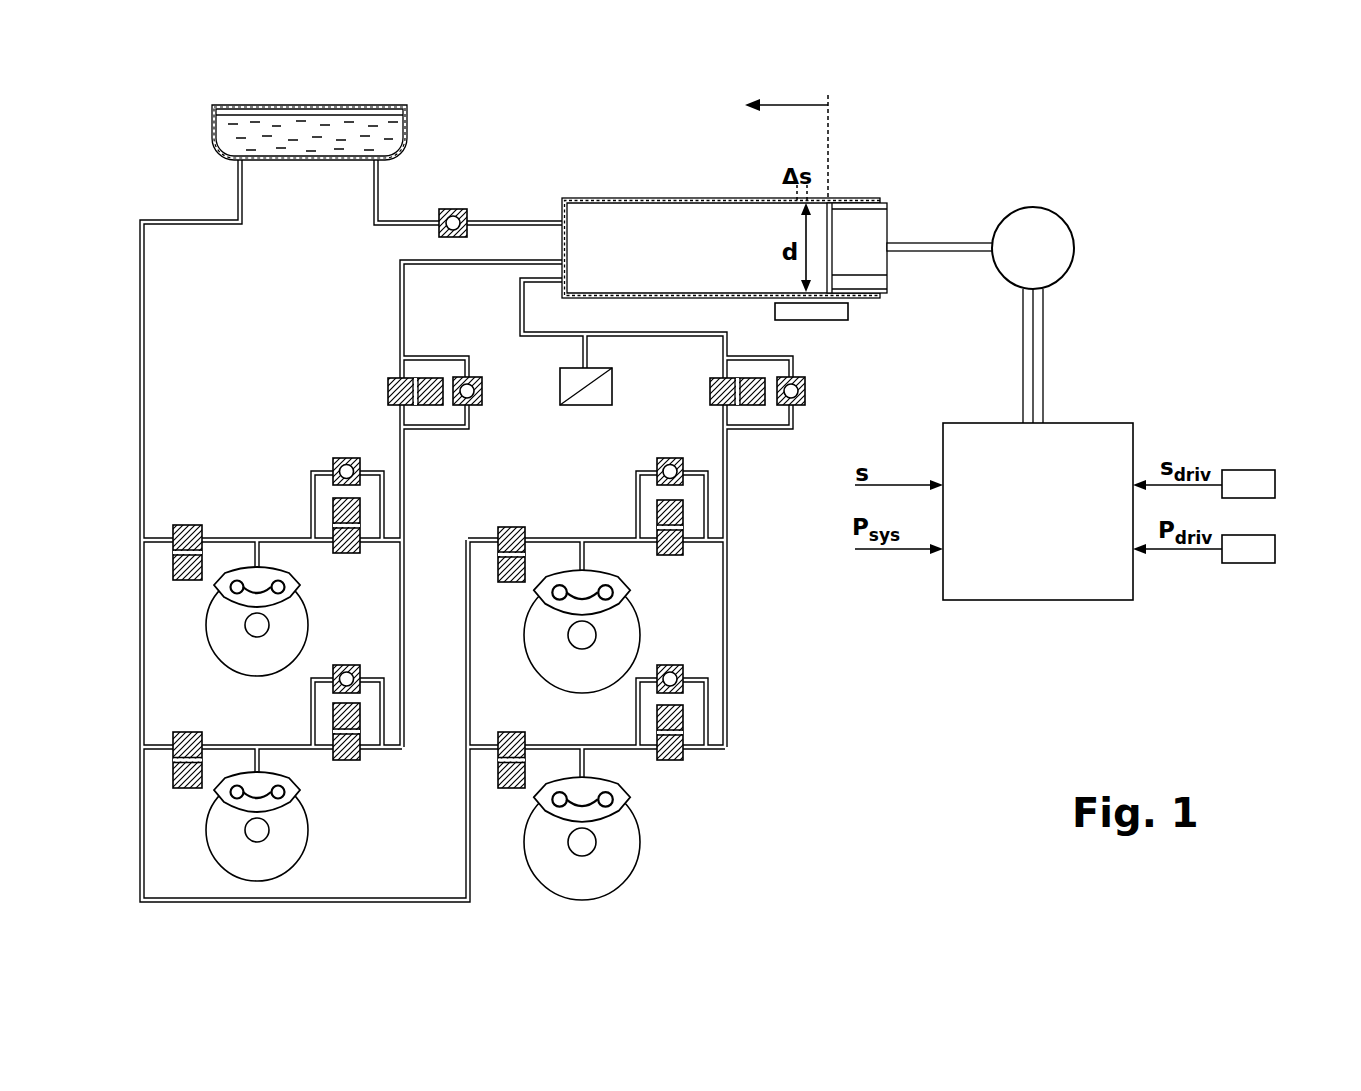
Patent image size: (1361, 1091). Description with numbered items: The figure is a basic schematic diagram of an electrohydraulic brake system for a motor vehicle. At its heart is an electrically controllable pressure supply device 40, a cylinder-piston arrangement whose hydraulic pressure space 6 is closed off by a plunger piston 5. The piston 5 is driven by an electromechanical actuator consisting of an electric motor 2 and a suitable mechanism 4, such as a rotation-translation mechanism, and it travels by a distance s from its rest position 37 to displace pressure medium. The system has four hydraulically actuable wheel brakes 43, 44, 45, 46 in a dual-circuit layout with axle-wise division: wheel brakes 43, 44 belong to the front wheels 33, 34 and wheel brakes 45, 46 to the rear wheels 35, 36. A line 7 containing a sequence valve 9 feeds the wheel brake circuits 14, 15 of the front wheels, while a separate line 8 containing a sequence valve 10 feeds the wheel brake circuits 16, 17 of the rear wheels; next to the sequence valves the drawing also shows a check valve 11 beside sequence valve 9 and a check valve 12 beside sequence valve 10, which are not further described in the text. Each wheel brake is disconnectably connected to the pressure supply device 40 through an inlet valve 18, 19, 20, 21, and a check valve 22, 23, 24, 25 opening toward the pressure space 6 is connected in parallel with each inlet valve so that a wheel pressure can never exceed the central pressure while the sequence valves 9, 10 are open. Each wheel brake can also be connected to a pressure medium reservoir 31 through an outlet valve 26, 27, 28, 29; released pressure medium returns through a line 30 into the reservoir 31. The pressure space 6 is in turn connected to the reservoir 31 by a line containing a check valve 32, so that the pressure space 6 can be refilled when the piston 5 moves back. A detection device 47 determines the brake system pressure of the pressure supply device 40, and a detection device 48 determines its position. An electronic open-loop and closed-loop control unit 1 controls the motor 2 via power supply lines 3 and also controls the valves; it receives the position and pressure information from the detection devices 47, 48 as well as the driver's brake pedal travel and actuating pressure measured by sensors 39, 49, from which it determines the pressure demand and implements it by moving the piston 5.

The open-loop and closed-loop control unit 1 is at (1040, 601).
The electric motor 2 is at (1075, 246).
The power supply lines 3 is at (1045, 366).
The mechanism 4 is at (940, 256).
The plunger piston 5 is at (865, 284).
The hydraulic pressure space 6 is at (620, 216).
The line 7 is at (519, 296).
The line 8 is at (399, 287).
The sequence valve 9 is at (712, 386).
The sequence valve 10 is at (387, 392).
The check valve 11 is at (806, 391).
The check valve 12 is at (483, 391).
The wheel brake circuit 14 is at (580, 537).
The wheel brake circuit 15 is at (582, 745).
The wheel brake circuit 16 is at (255, 537).
The wheel brake circuit 17 is at (257, 745).
The inlet valve 18 is at (684, 556).
The inlet valve 19 is at (684, 761).
The inlet valve 20 is at (362, 554).
The inlet valve 21 is at (361, 760).
The check valve 22 is at (670, 456).
The check valve 23 is at (672, 663).
The check valve 24 is at (332, 468).
The check valve 25 is at (344, 663).
The outlet valve 26 is at (509, 584).
The outlet valve 27 is at (509, 790).
The outlet valve 28 is at (186, 582).
The outlet valve 29 is at (186, 790).
The line 30 is at (145, 298).
The pressure medium reservoir 31 is at (214, 130).
The check valve 32 is at (453, 207).
The front wheel 33 is at (595, 672).
The front wheel 34 is at (628, 863).
The rear wheel 35 is at (270, 652).
The rear wheel 36 is at (298, 848).
The rest position 37 is at (831, 140).
The sensor 39 is at (1275, 483).
The pressure supply device 40 is at (670, 178).
The wheel brake 43 is at (620, 582).
The wheel brake 44 is at (621, 786).
The wheel brake 45 is at (292, 577).
The wheel brake 46 is at (292, 783).
The detection device 47 is at (588, 406).
The detection device 48 is at (774, 313).
The sensor 49 is at (1275, 547).